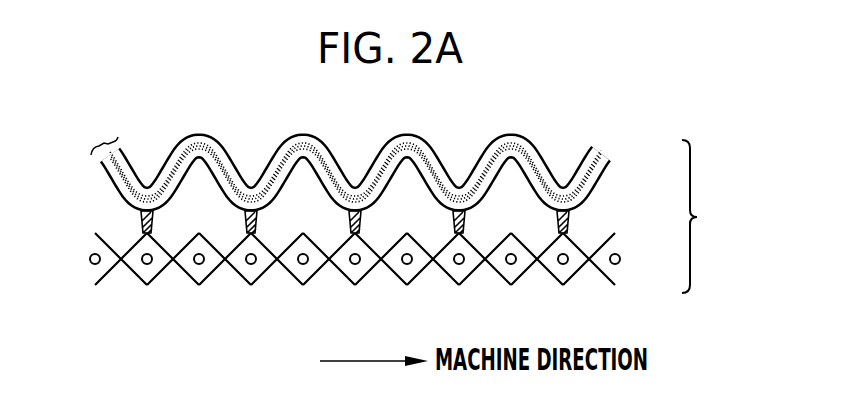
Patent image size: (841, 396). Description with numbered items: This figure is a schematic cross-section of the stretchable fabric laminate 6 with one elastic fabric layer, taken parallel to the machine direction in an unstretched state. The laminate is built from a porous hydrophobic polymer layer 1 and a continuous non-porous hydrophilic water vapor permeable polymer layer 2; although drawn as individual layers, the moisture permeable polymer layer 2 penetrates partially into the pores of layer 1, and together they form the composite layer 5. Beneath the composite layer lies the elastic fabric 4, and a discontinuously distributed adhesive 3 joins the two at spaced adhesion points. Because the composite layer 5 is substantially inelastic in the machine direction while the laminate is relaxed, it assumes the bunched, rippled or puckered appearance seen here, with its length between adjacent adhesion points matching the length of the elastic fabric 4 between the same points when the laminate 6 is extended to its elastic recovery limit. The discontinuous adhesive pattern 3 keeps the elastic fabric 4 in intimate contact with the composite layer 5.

The porous hydrophobic polymer layer 1 is at (318, 138).
The continuous non-porous hydrophilic water vapor permeable polymer layer 2 is at (333, 168).
The discontinuously distributed adhesive 3 is at (572, 223).
The elastic fabric 4 is at (442, 277).
The composite layer 5 is at (104, 132).
The stretchable fabric laminate 6 is at (699, 216).